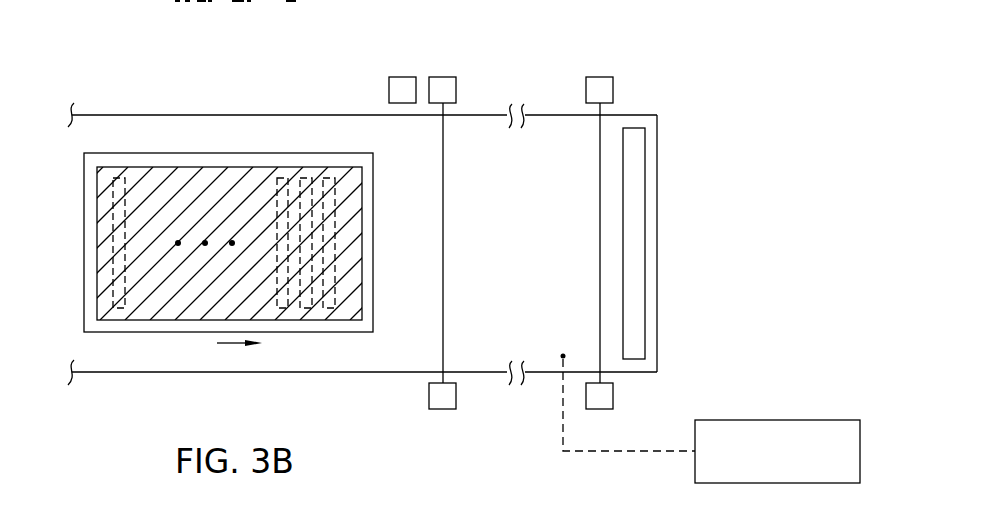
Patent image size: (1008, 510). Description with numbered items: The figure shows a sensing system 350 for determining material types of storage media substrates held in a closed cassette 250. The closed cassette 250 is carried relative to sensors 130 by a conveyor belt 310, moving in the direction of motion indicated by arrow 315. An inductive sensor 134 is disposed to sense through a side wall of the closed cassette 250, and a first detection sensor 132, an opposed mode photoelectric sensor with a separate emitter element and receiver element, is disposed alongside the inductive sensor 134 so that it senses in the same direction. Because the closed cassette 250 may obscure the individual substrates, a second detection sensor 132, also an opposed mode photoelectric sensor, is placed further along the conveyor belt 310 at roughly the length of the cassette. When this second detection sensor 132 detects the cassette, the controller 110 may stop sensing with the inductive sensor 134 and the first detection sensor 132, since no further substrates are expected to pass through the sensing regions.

The sensing system 350 is at (723, 42).
The conveyor belt 310 is at (242, 130).
The closed cassette 250 is at (155, 152).
The arrow 315 is at (230, 345).
The inductive sensor 134 is at (405, 77).
The detection sensor 132 is at (443, 77).
The sensors 130 is at (645, 157).
The controller 110 is at (798, 476).